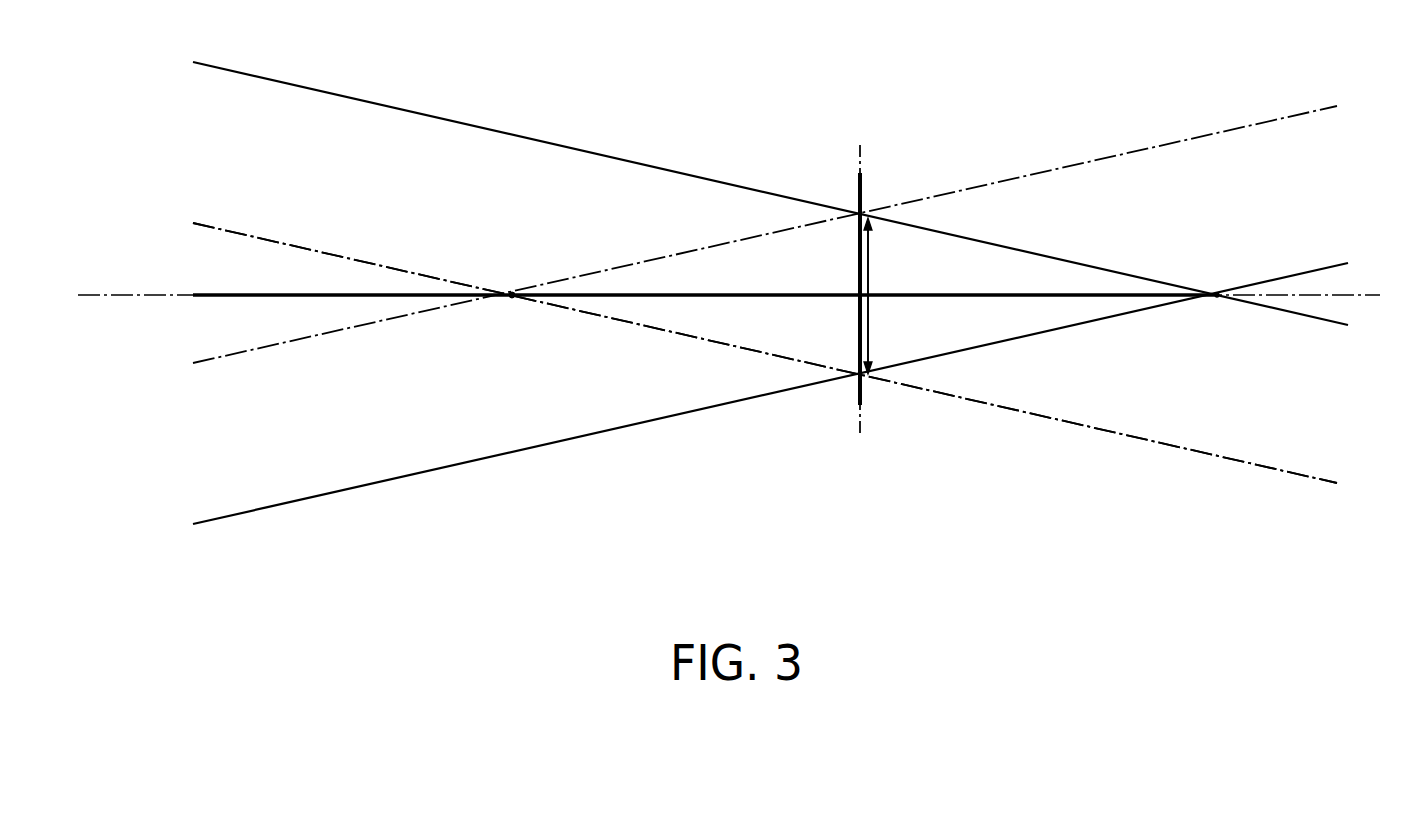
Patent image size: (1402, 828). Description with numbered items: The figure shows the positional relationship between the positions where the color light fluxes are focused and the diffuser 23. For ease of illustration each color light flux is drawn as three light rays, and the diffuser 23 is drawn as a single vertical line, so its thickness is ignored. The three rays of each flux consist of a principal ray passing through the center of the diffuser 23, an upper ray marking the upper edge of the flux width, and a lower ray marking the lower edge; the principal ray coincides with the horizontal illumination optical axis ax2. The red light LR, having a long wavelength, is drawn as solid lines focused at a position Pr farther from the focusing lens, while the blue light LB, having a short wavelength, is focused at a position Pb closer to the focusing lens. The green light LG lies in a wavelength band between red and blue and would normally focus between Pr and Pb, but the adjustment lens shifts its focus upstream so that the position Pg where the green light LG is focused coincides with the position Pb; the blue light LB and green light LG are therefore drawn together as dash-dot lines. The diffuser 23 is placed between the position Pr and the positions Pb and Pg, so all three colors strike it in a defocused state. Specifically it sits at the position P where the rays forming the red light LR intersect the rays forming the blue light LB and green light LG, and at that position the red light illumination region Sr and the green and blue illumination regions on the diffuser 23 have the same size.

The diffuser 23 is at (862, 393).
The position where light rays intersect P is at (859, 158).
The red light LR is at (562, 143).
The blue light LB is at (580, 275).
The green light LG is at (765, 353).
The red light illumination region Sr is at (868, 258).
The position where blue light is focused Pb is at (497, 292).
The position where green light is focused Pg is at (512, 295).
The position where red light is focused Pr is at (1218, 292).
The illumination optical axis ax2 is at (1365, 298).